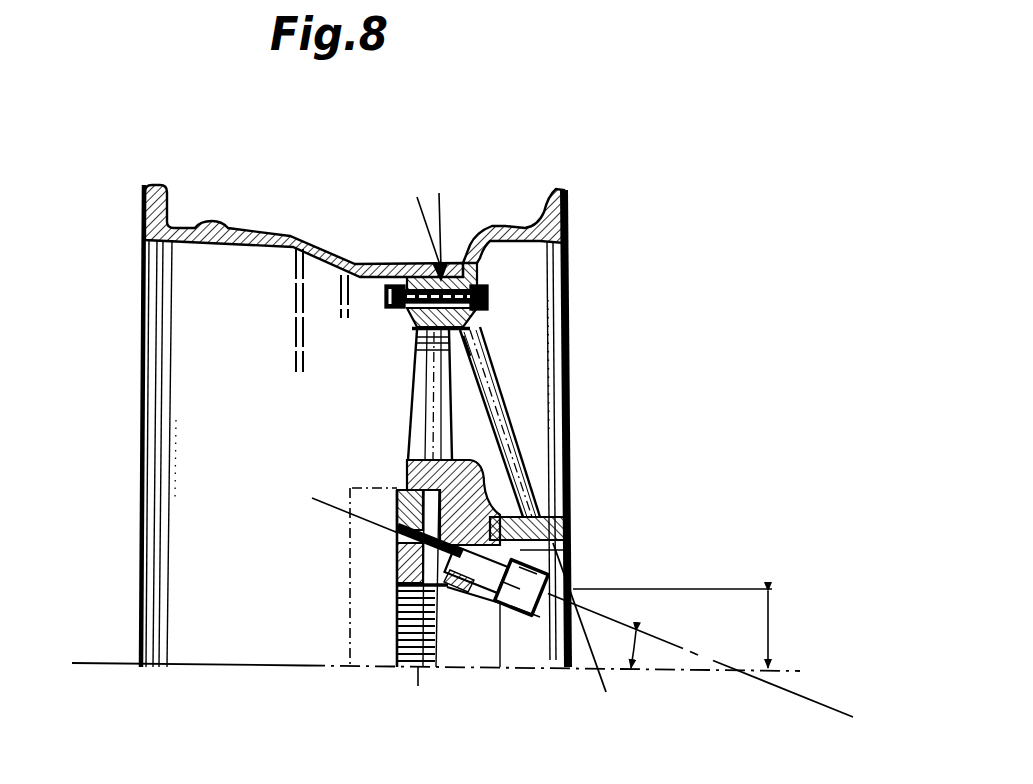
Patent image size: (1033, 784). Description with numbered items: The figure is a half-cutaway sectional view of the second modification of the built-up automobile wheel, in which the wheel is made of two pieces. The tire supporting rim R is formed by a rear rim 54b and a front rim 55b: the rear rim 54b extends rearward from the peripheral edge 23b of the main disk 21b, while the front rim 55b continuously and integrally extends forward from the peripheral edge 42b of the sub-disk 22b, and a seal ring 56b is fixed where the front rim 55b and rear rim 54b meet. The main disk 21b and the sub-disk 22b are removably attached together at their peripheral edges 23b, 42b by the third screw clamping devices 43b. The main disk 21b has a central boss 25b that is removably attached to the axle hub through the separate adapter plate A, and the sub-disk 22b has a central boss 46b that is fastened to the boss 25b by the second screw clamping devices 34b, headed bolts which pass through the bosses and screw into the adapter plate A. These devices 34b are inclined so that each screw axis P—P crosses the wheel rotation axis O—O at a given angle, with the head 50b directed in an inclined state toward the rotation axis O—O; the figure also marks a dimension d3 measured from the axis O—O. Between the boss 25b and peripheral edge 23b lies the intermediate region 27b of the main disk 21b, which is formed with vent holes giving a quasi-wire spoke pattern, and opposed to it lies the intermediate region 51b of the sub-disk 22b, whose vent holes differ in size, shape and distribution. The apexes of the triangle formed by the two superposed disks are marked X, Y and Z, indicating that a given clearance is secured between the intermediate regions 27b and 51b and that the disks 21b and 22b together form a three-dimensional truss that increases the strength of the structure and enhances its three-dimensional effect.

The rear rim 54b is at (257, 232).
The front rim 55b is at (515, 228).
The seal ring 56b is at (441, 268).
The third screw clamping devices 43b is at (490, 298).
The peripheral edge of the sub-disk 42b is at (477, 322).
The intermediate region of the sub-disk 51b is at (508, 390).
The sub-disk 22b is at (534, 433).
The peripheral edge of the main disk 23b is at (410, 323).
The intermediate region of the main disk 27b is at (412, 376).
The main disk 21b is at (411, 407).
The boss of the main disk 25b is at (405, 480).
The boss of the sub-disk 46b is at (573, 531).
The second screw clamping devices 34b is at (481, 603).
The head 50b is at (527, 603).
The triangle apex X is at (440, 262).
The tire supporting rim R is at (141, 434).
The screw axis P is at (588, 606).
The adapter plate A is at (400, 565).
The wheel rotation axis O is at (435, 672).
The triangle apex Y is at (419, 668).
The triangle apex Z is at (597, 668).
The offset distance d3 is at (677, 628).